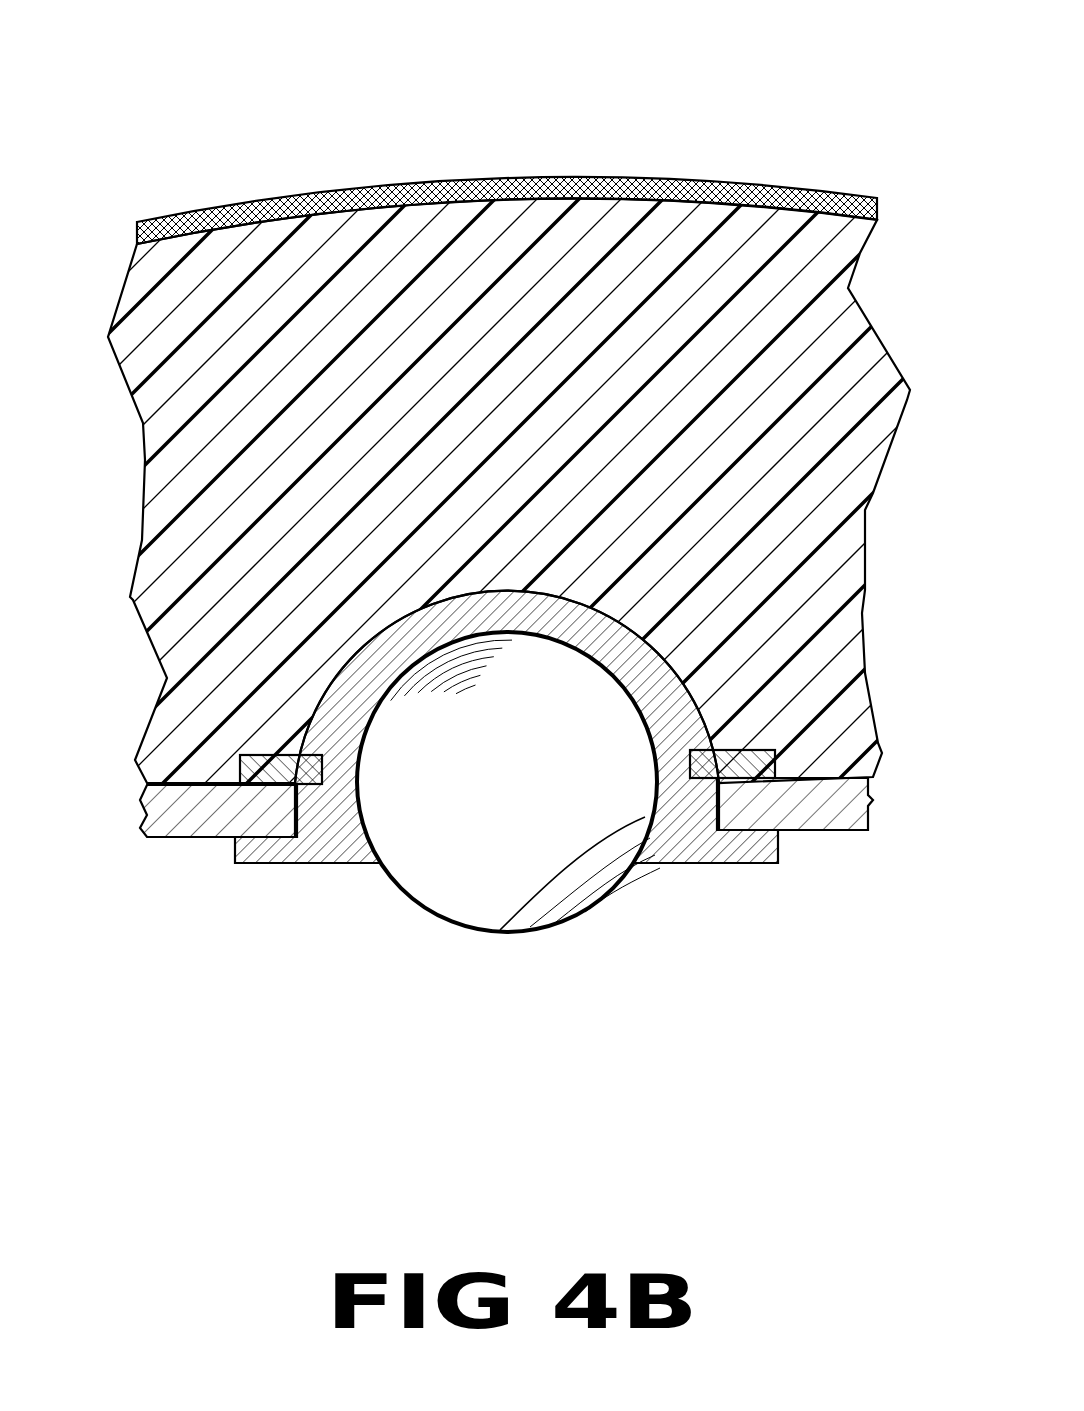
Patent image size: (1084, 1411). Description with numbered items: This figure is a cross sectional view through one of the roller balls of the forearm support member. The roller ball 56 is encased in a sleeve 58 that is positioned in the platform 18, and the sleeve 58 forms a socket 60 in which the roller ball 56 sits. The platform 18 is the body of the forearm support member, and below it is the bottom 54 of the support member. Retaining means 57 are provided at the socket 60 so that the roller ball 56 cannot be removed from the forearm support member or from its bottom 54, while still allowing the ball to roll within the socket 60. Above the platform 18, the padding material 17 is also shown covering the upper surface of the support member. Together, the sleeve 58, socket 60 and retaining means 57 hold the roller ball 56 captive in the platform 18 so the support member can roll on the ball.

The padding material 17 is at (523, 177).
The platform 18 is at (315, 230).
The bottom 54 is at (847, 803).
The roller ball 56 is at (415, 850).
The retaining means 57 is at (740, 760).
The sleeve 58 is at (688, 810).
The socket 60 is at (515, 917).